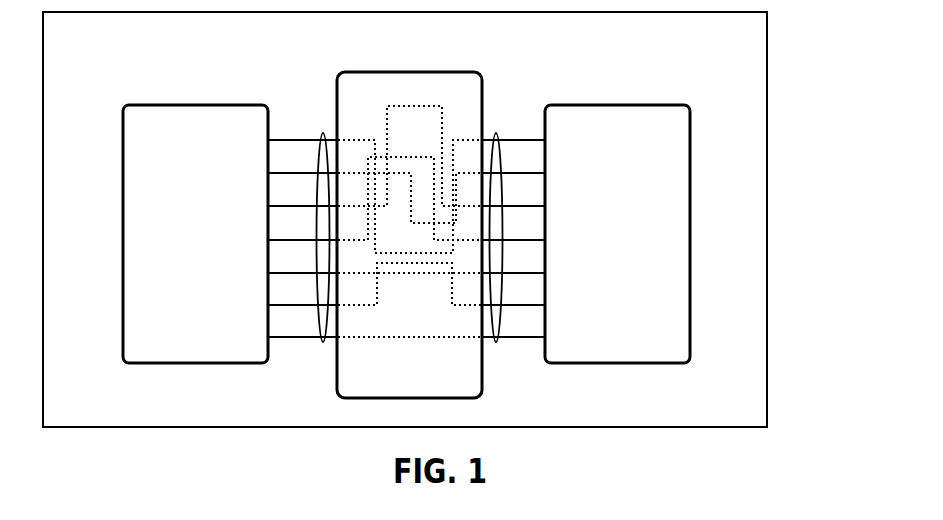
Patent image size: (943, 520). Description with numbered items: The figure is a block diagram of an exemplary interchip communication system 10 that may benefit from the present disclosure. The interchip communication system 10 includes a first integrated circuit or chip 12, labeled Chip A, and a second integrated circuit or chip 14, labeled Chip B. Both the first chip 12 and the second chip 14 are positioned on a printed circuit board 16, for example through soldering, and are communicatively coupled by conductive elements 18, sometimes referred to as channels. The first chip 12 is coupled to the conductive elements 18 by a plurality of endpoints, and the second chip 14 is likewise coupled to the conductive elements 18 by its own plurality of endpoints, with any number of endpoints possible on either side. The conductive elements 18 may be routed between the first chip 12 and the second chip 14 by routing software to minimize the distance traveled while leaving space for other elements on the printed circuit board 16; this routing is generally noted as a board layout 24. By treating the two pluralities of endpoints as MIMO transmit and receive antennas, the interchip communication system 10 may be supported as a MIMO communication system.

The interchip communication system 10 is at (444, 219).
The first integrated circuit or chip 12 is at (202, 105).
The second integrated circuit or chip 14 is at (613, 104).
The printed circuit board 16 is at (767, 370).
The conductive elements 18 is at (323, 133).
The board layout 24 is at (422, 72).